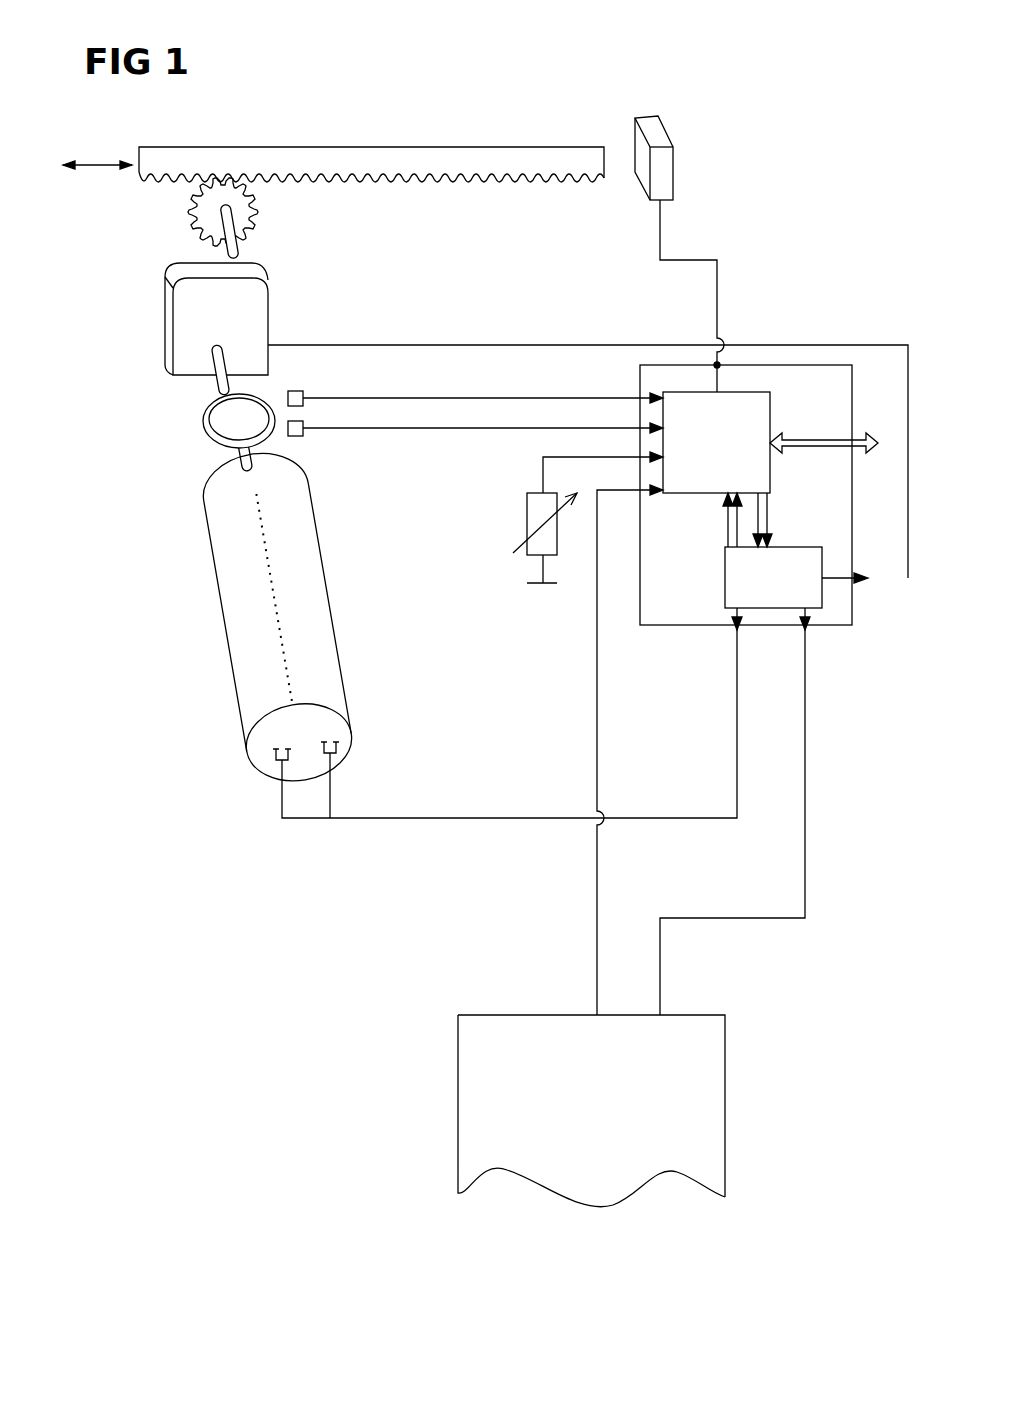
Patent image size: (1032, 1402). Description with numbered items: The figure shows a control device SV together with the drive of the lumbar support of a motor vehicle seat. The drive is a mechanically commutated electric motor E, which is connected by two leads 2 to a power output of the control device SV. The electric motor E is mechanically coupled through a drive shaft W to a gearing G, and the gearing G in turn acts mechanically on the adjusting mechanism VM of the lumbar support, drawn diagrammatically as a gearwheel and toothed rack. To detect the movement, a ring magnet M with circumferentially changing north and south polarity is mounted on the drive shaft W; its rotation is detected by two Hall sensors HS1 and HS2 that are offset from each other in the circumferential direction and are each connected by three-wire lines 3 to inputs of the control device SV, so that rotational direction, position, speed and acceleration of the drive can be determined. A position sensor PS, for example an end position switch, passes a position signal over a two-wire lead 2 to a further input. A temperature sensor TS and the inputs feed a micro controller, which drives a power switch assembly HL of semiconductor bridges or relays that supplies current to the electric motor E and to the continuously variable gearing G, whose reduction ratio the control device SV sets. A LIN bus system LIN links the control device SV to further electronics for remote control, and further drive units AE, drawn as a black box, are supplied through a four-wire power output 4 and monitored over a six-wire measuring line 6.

The adjusting mechanism VM is at (303, 123).
The gearing G is at (252, 317).
The drive shaft W is at (222, 378).
The ring magnet M is at (204, 410).
The electric motor E is at (327, 660).
The Hall sensor HS1 is at (304, 392).
The Hall sensor HS2 is at (303, 436).
The position sensor PS is at (667, 180).
The temperature sensor TS is at (538, 505).
The control device SV is at (759, 690).
The power switch assembly HL is at (764, 754).
The LIN bus system LIN is at (833, 431).
The drive units AE is at (703, 1063).
The two-wire line 2 is at (286, 352).
The three-wire line 3 is at (318, 405).
The four-wire line 4 is at (654, 964).
The six-wire line 6 is at (591, 950).